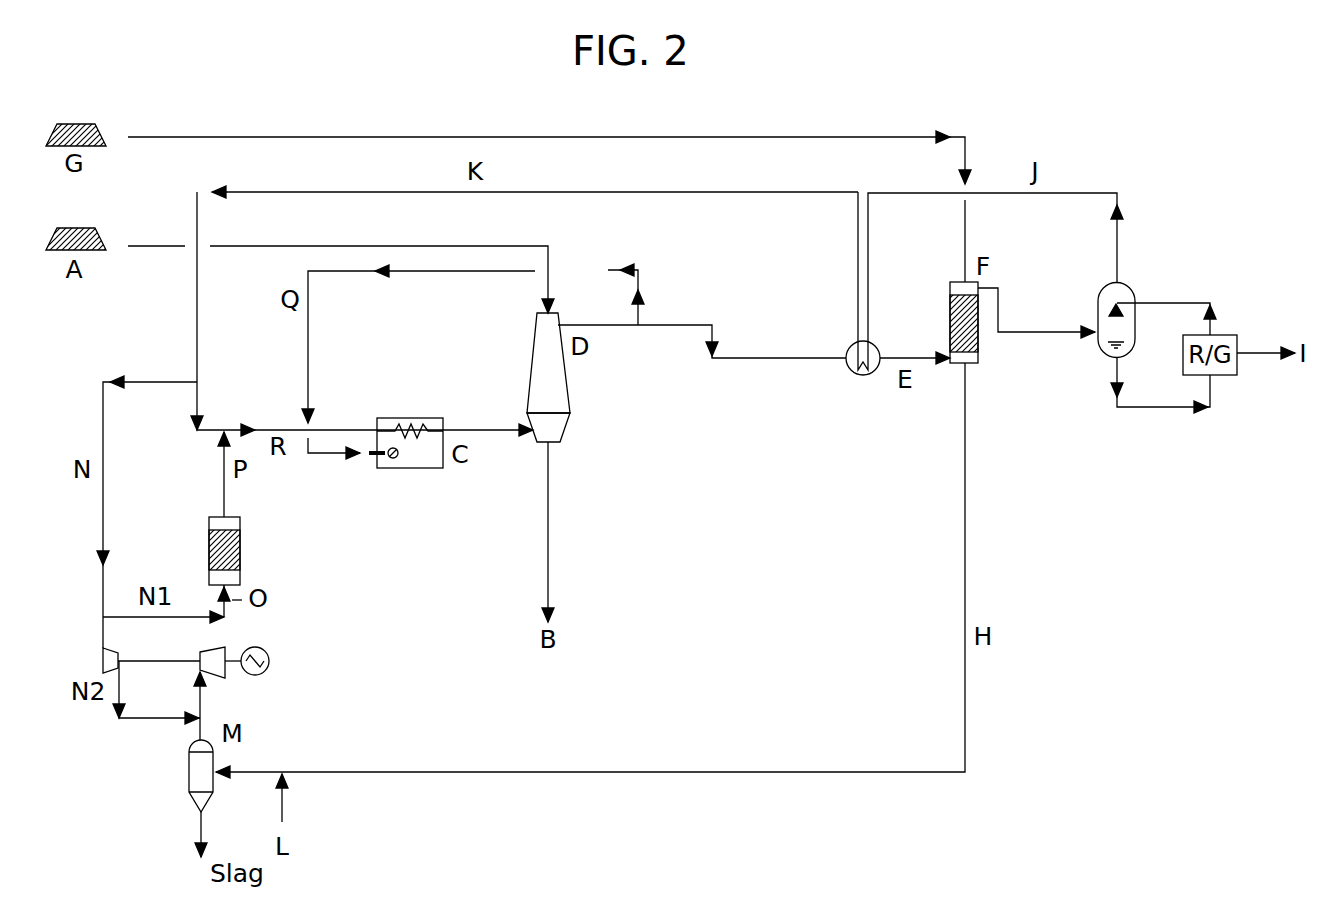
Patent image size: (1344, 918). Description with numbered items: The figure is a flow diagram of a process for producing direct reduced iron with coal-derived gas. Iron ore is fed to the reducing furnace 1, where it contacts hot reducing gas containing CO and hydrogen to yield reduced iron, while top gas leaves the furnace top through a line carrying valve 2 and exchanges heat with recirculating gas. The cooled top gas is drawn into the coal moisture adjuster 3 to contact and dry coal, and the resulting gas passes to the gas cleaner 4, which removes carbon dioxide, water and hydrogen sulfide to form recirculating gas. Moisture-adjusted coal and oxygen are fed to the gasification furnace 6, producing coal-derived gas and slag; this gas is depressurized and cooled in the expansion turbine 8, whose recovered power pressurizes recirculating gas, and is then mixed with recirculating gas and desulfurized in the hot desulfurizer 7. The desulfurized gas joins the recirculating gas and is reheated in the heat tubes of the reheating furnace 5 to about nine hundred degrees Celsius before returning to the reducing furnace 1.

The reducing furnace 1 is at (565, 388).
The valve 2 is at (640, 284).
The coal moisture adjuster 3 is at (986, 362).
The gas cleaner 4 is at (1166, 290).
The reheating furnace 5 is at (410, 418).
The gasification furnace 6 is at (195, 772).
The hot desulfurizer 7 is at (240, 543).
The expansion turbine 8 is at (243, 677).